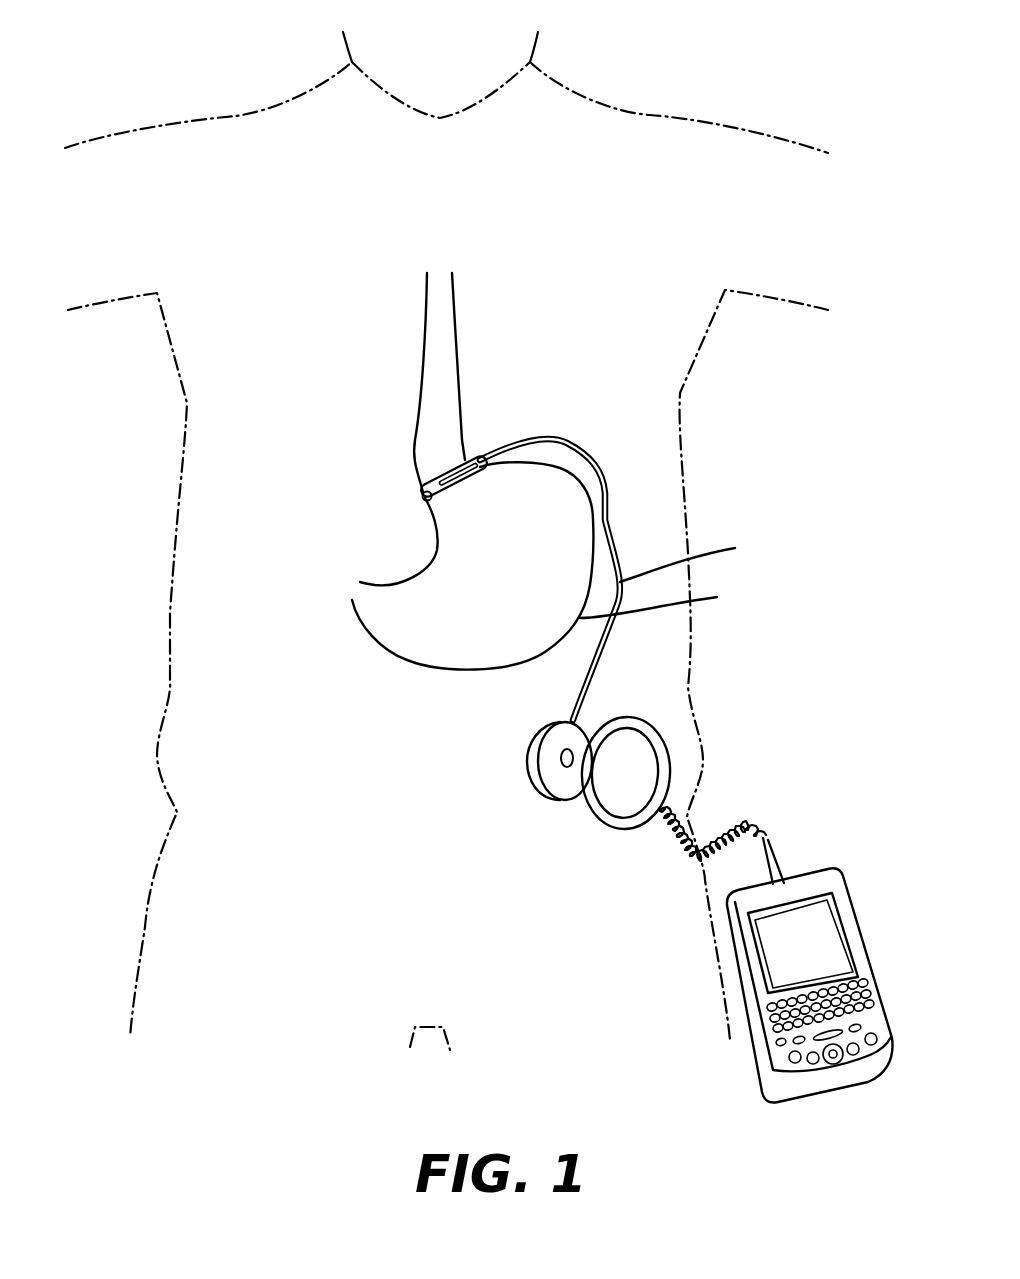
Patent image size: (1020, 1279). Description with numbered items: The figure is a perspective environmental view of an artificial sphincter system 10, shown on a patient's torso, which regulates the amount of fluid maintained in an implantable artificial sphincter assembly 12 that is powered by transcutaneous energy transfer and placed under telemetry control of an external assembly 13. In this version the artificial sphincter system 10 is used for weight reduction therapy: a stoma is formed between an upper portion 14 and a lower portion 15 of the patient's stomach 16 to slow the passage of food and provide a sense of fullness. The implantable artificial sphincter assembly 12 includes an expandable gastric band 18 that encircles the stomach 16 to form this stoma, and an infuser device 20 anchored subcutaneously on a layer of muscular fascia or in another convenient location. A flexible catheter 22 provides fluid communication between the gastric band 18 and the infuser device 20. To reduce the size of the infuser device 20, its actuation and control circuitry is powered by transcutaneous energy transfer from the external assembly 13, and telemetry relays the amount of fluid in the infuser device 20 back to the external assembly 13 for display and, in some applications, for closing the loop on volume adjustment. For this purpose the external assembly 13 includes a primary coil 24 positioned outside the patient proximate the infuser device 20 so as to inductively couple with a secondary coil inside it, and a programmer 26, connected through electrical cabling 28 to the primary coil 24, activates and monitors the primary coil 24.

The artificial sphincter system 10 is at (784, 652).
The implantable artificial sphincter assembly 12 is at (602, 660).
The external assembly 13 is at (732, 785).
The upper portion 14 is at (467, 445).
The lower portion 15 is at (666, 601).
The stomach 16 is at (408, 560).
The expandable gastric band 18 is at (420, 498).
The infuser device 20 is at (535, 735).
The flexible catheter 22 is at (696, 560).
The primary coil 24 is at (617, 825).
The programmer 26 is at (850, 890).
The electrical cabling 28 is at (766, 834).